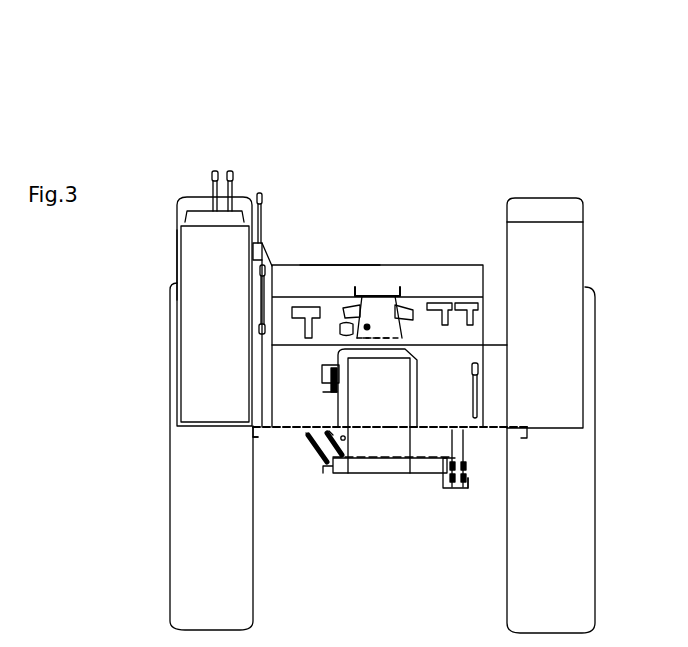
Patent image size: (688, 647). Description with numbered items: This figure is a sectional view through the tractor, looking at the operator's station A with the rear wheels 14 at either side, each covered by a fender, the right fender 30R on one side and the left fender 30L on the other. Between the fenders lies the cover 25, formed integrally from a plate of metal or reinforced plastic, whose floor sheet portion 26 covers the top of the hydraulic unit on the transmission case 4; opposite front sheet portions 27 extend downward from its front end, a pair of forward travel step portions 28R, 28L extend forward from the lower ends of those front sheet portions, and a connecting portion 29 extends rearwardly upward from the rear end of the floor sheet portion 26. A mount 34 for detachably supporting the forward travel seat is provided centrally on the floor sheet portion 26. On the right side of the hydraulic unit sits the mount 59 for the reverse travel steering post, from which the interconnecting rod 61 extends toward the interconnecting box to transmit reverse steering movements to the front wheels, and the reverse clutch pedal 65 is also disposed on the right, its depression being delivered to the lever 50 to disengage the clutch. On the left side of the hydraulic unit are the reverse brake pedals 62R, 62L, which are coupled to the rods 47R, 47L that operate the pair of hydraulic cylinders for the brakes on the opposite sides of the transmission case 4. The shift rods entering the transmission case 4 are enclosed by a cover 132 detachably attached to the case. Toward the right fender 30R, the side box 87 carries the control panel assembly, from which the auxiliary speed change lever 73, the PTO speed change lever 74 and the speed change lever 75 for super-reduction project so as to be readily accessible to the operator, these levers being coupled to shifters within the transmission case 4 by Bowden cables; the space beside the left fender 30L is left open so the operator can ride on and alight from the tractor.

The transmission case 4 is at (370, 452).
The rear wheels 14 is at (247, 588).
The cover 25 is at (286, 436).
The floor sheet portion 26 is at (287, 333).
The front sheet portions 27 is at (465, 358).
The forward travel step portion 28R is at (277, 436).
The forward travel step portion 28L is at (492, 432).
The connecting portion 29 is at (483, 265).
The right fender 30R is at (187, 197).
The left fender 30L is at (540, 207).
The mount 34 is at (370, 287).
The rod 47R is at (450, 448).
The rod 47L is at (470, 462).
The lever 50 is at (398, 452).
The mount 59 is at (330, 334).
The interconnecting rod 61 is at (327, 465).
The reverse brake pedal 62R is at (437, 303).
The reverse brake pedal 62L is at (462, 303).
The reverse clutch pedal 65 is at (290, 313).
The auxiliary speed change lever 73 is at (215, 171).
The PTO speed change lever 74 is at (233, 172).
The speed change lever for super-reduction 75 is at (262, 198).
The side box 87 is at (176, 250).
The cover 132 is at (403, 335).
The operator's station A is at (383, 223).